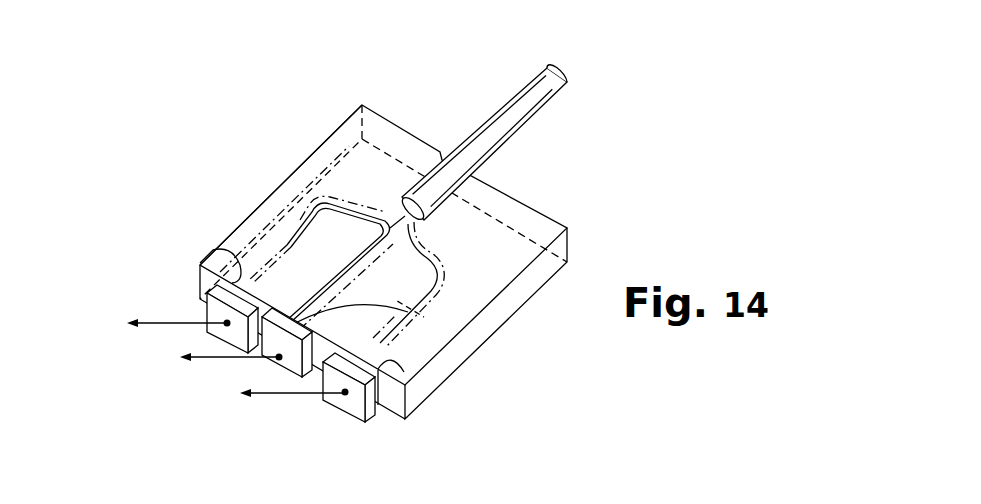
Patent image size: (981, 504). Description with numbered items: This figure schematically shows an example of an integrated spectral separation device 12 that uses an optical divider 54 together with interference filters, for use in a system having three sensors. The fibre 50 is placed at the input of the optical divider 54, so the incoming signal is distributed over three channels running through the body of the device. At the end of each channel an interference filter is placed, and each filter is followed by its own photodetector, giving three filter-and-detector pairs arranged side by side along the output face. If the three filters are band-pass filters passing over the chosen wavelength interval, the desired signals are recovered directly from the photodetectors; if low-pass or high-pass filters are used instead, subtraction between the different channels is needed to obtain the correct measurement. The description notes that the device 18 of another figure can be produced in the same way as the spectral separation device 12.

The integrated spectral separation device 12 is at (572, 165).
The device 18 is at (383, 262).
The fibre 50 is at (530, 86).
The optical divider 54 is at (300, 166).